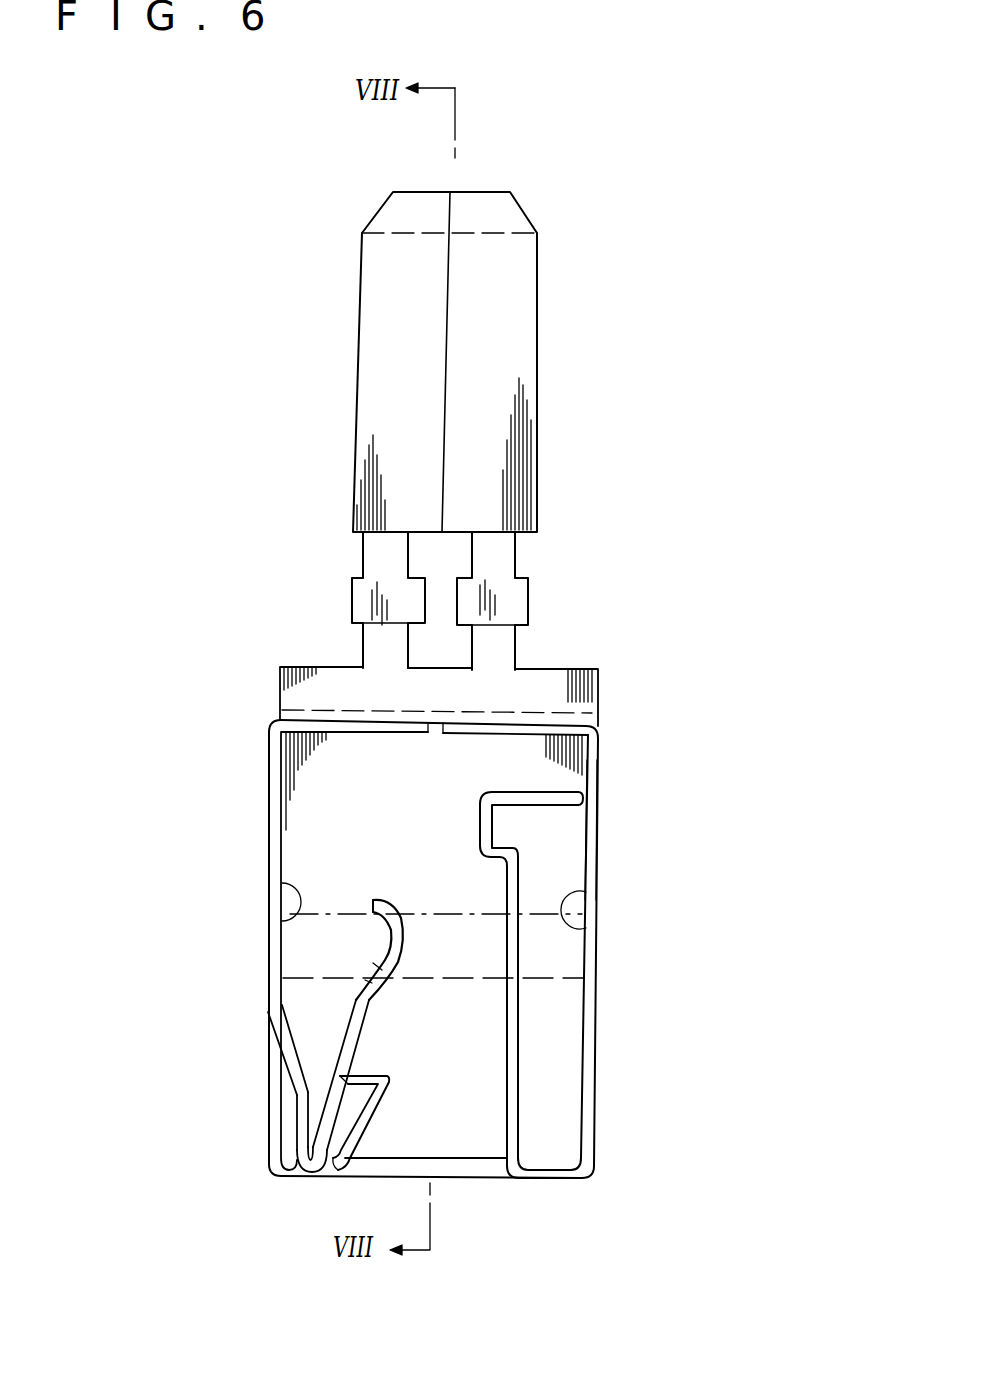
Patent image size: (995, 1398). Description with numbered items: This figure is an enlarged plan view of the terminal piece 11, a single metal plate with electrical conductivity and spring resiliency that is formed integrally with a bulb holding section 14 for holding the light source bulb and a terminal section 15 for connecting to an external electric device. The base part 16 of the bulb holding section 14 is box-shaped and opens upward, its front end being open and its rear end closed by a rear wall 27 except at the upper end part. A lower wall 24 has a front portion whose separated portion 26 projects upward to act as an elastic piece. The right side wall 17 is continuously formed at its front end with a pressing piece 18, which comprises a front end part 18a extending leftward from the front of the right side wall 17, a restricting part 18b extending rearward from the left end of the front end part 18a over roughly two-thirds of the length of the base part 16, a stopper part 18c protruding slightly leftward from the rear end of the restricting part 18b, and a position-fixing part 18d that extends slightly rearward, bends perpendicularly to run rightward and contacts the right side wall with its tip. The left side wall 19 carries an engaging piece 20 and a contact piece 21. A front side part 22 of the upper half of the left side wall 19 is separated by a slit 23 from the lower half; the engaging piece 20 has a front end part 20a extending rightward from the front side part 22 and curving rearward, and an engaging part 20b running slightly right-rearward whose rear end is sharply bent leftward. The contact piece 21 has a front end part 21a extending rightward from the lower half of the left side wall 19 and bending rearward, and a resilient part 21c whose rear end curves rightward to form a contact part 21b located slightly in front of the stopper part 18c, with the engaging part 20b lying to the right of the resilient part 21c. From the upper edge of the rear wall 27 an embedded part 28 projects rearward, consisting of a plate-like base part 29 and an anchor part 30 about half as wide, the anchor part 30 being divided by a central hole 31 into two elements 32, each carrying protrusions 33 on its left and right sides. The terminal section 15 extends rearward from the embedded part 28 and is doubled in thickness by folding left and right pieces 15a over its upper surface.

The terminal piece 11 is at (538, 307).
The bulb holding section 14 is at (538, 793).
The terminal section 15 is at (372, 350).
The left and right pieces 15a is at (372, 294).
The base part 16 is at (595, 838).
The right side wall 17 is at (592, 872).
The pressing piece 18 is at (493, 862).
The front end part 18a is at (550, 1178).
The restricting part 18b is at (513, 1113).
The stopper part 18c is at (518, 963).
The position-fixing part 18d is at (547, 795).
The left side wall 19 is at (275, 778).
The engaging piece 20 is at (357, 1137).
The front end part 20a is at (328, 1175).
The engaging part 20b is at (388, 1078).
The contact piece 21 is at (338, 1064).
The front end part 21a is at (292, 1176).
The contact part 21b is at (393, 932).
The resilient part 21c is at (361, 1020).
The front side part 22 is at (287, 1057).
The slit 23 is at (276, 1106).
The lower wall 24 is at (315, 845).
The separated portion 26 is at (483, 1050).
The rear wall 27 is at (492, 728).
The embedded part 28 is at (280, 680).
The base part 29 is at (317, 672).
The anchor part 30 is at (518, 592).
The hole 31 is at (415, 538).
The divided elements 32 is at (372, 552).
The protrusions 33 is at (373, 648).